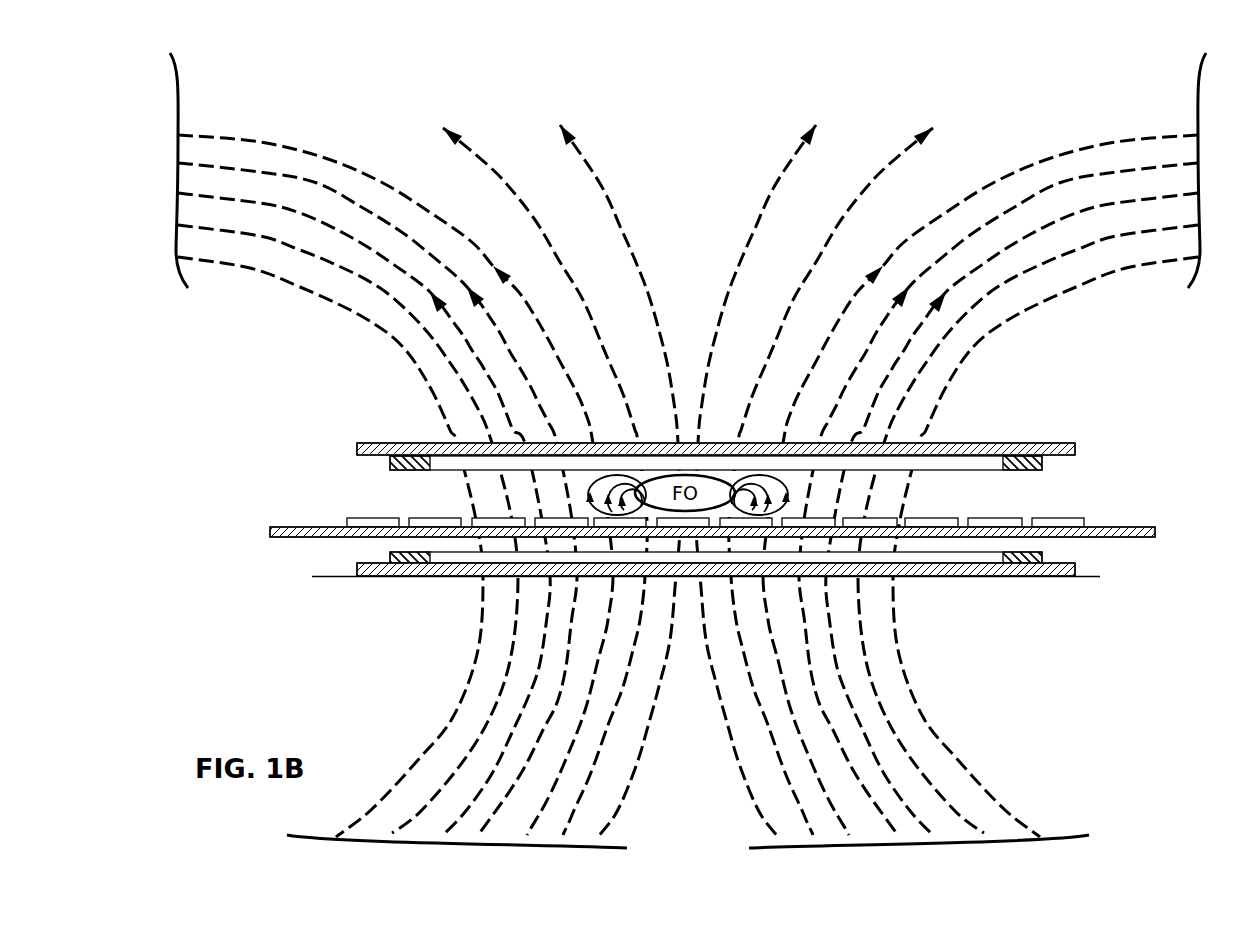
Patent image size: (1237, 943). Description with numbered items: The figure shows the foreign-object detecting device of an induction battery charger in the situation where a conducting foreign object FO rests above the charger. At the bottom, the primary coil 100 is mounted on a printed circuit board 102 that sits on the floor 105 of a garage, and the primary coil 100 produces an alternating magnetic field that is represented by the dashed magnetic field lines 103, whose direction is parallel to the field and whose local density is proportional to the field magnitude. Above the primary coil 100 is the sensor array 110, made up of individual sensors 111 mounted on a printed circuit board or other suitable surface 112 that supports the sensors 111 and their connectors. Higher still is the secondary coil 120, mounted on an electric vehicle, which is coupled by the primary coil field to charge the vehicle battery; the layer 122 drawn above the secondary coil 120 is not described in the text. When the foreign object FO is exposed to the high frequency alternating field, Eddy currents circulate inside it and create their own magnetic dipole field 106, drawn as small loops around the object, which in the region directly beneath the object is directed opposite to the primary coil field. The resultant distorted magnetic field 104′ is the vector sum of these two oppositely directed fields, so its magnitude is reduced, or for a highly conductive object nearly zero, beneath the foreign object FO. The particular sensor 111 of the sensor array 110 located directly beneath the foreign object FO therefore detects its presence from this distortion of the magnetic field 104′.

The magnetic field lines 103 is at (323, 157).
The distorted magnetic field 104′ is at (688, 425).
The sensor array 110 is at (715, 507).
The upper plate 122 is at (383, 442).
The secondary coil 120 is at (365, 462).
The sensors 111 is at (336, 513).
The printed circuit board/surface 112 is at (1123, 538).
The primary coil 100 is at (367, 550).
The printed circuit board 102 is at (375, 578).
The floor 105 is at (1053, 577).
The magnetic dipole field 106 is at (607, 517).